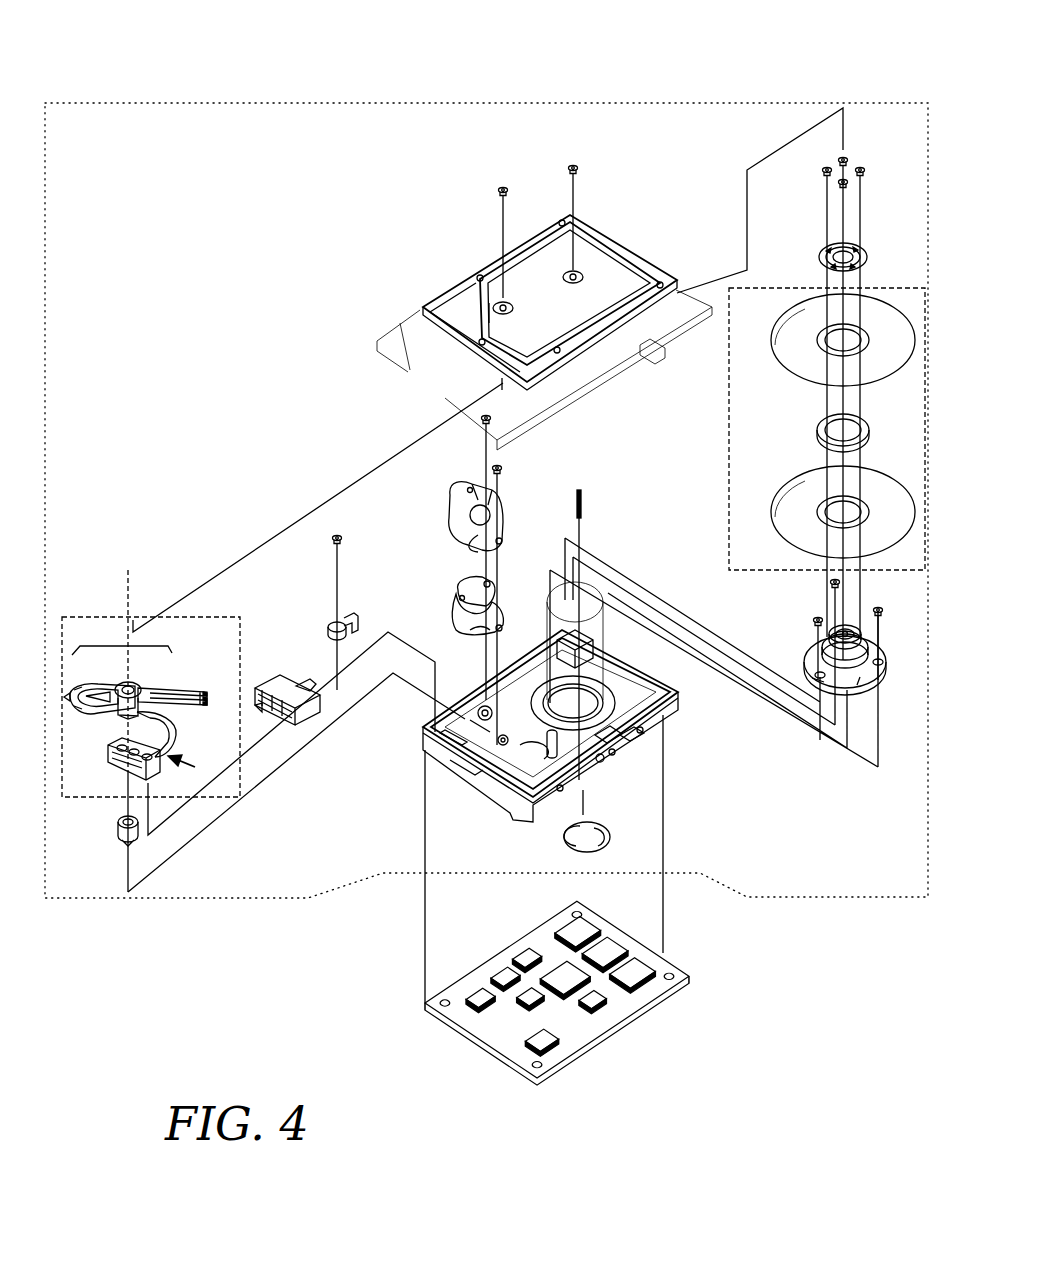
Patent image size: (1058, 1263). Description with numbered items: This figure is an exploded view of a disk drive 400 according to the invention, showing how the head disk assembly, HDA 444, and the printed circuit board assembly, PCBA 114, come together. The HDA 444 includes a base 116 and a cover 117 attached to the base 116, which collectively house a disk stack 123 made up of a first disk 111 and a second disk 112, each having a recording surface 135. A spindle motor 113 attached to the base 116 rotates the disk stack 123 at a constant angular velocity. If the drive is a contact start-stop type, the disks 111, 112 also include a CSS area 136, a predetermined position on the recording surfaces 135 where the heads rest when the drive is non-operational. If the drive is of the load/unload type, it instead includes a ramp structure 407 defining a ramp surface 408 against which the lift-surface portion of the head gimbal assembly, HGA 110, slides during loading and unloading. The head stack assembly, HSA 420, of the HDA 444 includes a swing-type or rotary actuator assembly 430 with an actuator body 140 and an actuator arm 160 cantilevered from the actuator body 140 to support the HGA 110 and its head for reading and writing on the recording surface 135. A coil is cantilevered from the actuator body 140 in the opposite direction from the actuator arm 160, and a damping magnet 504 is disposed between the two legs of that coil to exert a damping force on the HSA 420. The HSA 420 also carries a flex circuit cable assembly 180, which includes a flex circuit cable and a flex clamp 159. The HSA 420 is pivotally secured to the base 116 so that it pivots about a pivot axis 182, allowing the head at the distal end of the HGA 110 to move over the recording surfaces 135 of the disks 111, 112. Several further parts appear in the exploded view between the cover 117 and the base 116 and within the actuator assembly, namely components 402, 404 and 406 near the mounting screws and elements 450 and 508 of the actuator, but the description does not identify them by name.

The disk drive 400 is at (308, 72).
The head disk assembly 444 is at (770, 897).
The cover 117 is at (452, 285).
The latch bracket 402 is at (468, 502).
The gasket 406 is at (462, 594).
The mounting bracket 404 is at (456, 621).
The disk stack 123 is at (730, 484).
The second disk 112 is at (792, 372).
The first disk 111 is at (788, 491).
The recording surface 135 is at (783, 341).
The CSS area 136 is at (866, 342).
The spindle motor 113 is at (812, 653).
The base 116 is at (668, 735).
The printed circuit board assembly 114 is at (607, 1028).
The head stack assembly 420 is at (100, 617).
The pivot axis 182 is at (129, 578).
The rotary actuator assembly 430 is at (122, 637).
The damping magnet 504 is at (115, 692).
The flexure 450 is at (84, 706).
The actuator body 140 is at (135, 686).
The head gimbal assembly 110 is at (200, 692).
The actuator arm 160 is at (178, 706).
The flex clamp 159 is at (127, 758).
The flex circuit cable assembly 180 is at (199, 760).
The pivot shaft screw 508 is at (118, 835).
The ramp surface 408 is at (258, 678).
The ramp structure 407 is at (303, 677).